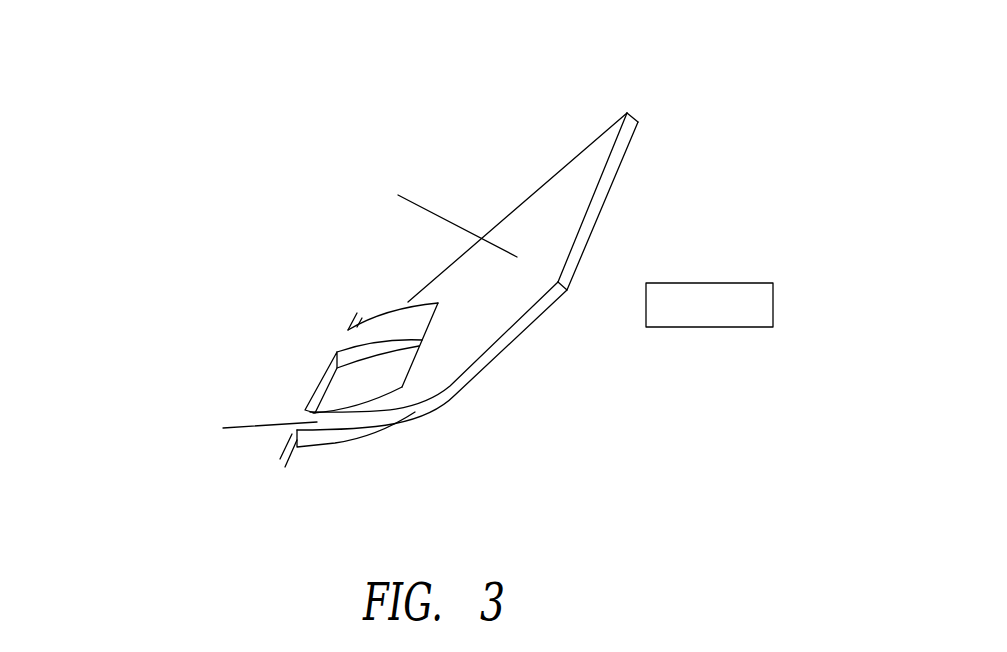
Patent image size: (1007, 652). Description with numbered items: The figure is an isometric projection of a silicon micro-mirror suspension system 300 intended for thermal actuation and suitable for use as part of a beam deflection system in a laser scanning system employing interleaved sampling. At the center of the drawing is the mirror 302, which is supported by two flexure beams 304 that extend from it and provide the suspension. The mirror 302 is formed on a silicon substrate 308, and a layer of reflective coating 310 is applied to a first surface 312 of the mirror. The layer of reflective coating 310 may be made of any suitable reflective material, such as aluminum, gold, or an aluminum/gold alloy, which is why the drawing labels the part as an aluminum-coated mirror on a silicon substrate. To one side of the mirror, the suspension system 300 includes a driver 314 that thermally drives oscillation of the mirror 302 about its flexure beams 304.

The silicon micro-mirror suspension system 300 is at (688, 142).
The mirror 302 is at (547, 182).
The flexure beams 304 is at (408, 305).
The silicon substrate 308 is at (473, 357).
The layer of reflective coating 310 is at (573, 203).
The first surface 312 is at (497, 307).
The driver 314 is at (708, 283).